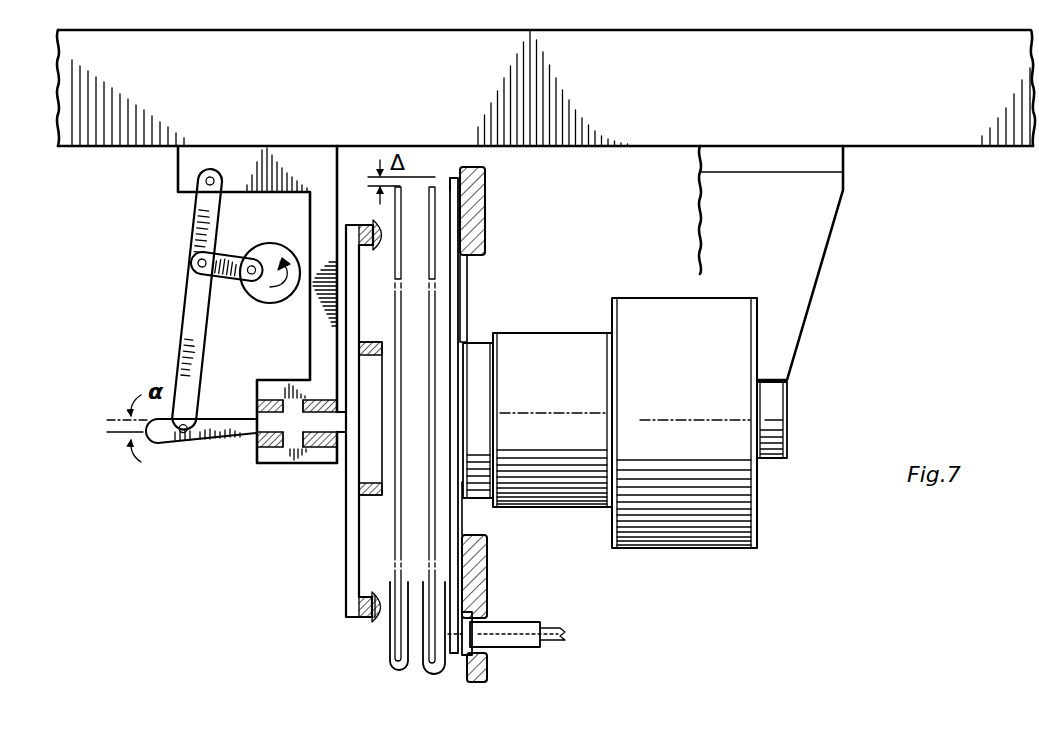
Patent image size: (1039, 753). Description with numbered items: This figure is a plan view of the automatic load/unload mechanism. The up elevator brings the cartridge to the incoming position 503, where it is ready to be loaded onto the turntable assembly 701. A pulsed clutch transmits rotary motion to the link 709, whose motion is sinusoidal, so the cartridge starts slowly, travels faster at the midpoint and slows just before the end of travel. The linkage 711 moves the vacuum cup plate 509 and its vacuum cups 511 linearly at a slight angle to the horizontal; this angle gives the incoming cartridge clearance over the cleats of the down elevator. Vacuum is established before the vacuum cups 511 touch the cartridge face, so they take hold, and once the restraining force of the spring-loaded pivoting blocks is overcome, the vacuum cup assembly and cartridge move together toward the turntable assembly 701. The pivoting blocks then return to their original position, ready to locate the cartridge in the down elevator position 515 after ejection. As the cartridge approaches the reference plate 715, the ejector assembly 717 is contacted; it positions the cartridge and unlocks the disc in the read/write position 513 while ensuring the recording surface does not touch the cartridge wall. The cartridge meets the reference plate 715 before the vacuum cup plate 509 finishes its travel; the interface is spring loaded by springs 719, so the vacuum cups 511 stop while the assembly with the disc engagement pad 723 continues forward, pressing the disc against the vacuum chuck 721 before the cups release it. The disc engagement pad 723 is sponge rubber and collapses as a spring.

The incoming position 503 is at (400, 545).
The vacuum cup plate 509 is at (347, 530).
The vacuum cups 511 is at (380, 626).
The read/write position 513 is at (455, 178).
The down elevator position 515 is at (434, 302).
The turntable assembly 701 is at (540, 343).
The link 709 is at (279, 250).
The linkage 711 is at (186, 342).
The reference plate 715 is at (486, 205).
The ejector assembly 717 is at (514, 640).
The springs 719 is at (377, 237).
The vacuum chuck 721 is at (478, 346).
The disc engagement pad 723 is at (366, 465).